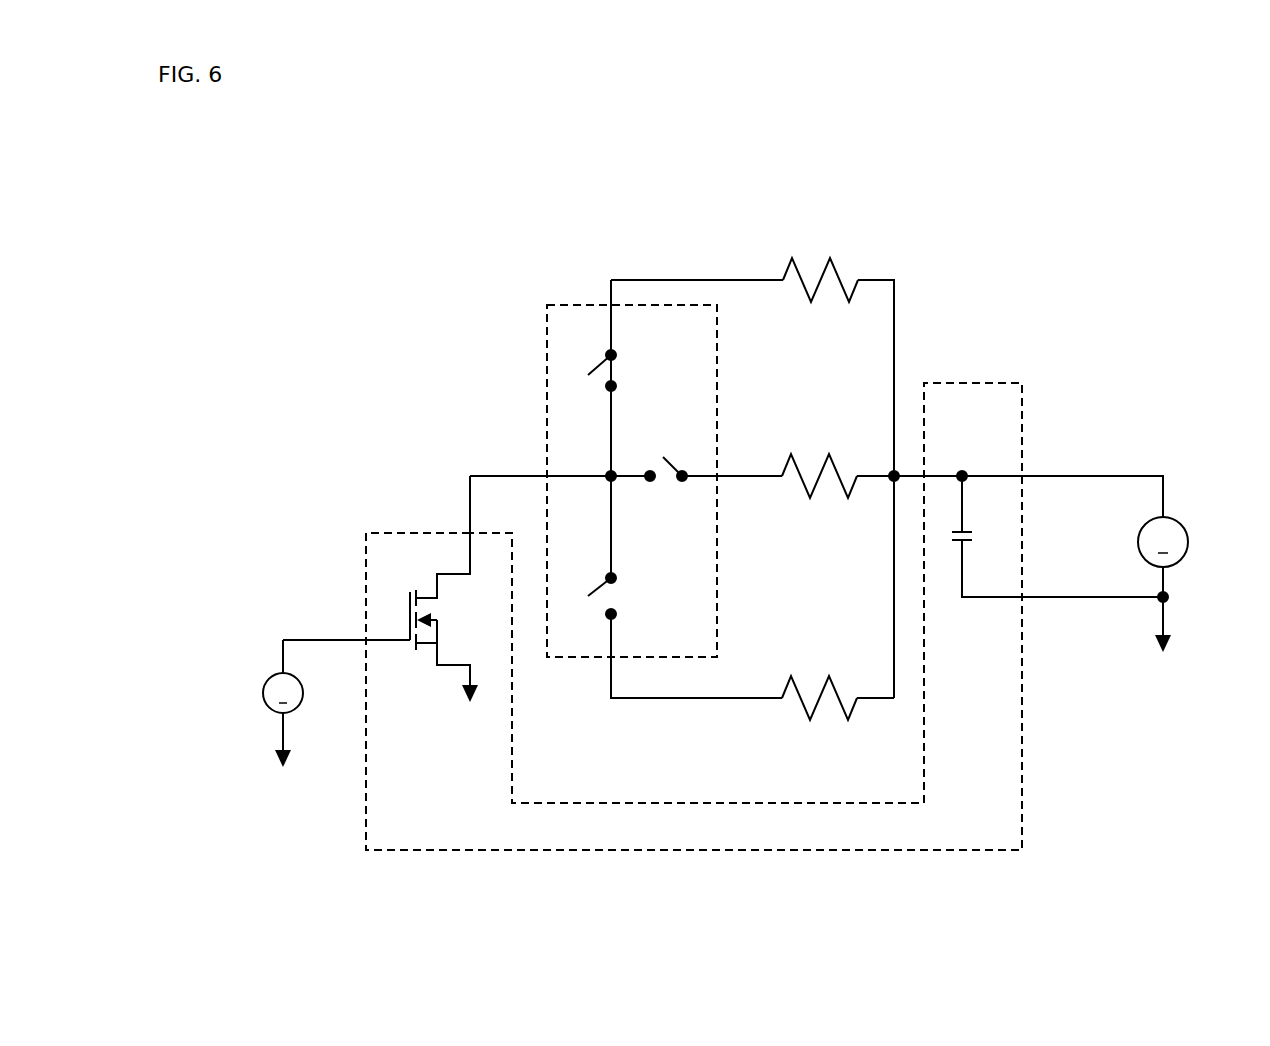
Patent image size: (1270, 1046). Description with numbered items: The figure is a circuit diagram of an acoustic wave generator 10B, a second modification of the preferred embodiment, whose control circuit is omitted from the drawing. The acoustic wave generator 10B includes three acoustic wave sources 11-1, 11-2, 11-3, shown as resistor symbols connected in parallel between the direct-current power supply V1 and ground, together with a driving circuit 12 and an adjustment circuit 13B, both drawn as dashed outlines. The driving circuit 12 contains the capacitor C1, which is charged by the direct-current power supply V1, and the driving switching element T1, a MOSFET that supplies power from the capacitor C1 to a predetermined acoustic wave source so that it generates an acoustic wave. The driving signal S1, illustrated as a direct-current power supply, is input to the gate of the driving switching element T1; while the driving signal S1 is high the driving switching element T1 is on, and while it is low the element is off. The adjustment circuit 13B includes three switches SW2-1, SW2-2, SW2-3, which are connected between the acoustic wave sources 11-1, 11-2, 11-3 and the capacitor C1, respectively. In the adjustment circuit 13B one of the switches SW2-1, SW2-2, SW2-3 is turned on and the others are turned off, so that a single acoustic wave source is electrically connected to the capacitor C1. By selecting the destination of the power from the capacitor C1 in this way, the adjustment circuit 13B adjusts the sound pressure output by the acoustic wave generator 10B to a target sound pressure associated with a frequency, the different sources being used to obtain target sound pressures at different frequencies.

The acoustic wave generator 10B is at (291, 179).
The driving circuit 12 is at (383, 533).
The adjustment circuit 13B is at (588, 303).
The acoustic wave source 11-1 is at (825, 270).
The acoustic wave source 11-2 is at (822, 466).
The acoustic wave source 11-3 is at (822, 688).
The switch SW2-1 is at (611, 355).
The switch SW2-2 is at (665, 462).
The switch SW2-3 is at (603, 582).
The driving switching element T1 is at (410, 612).
The driving signal S1 is at (268, 678).
The capacitor C1 is at (966, 542).
The direct-current power supply V1 is at (1188, 528).